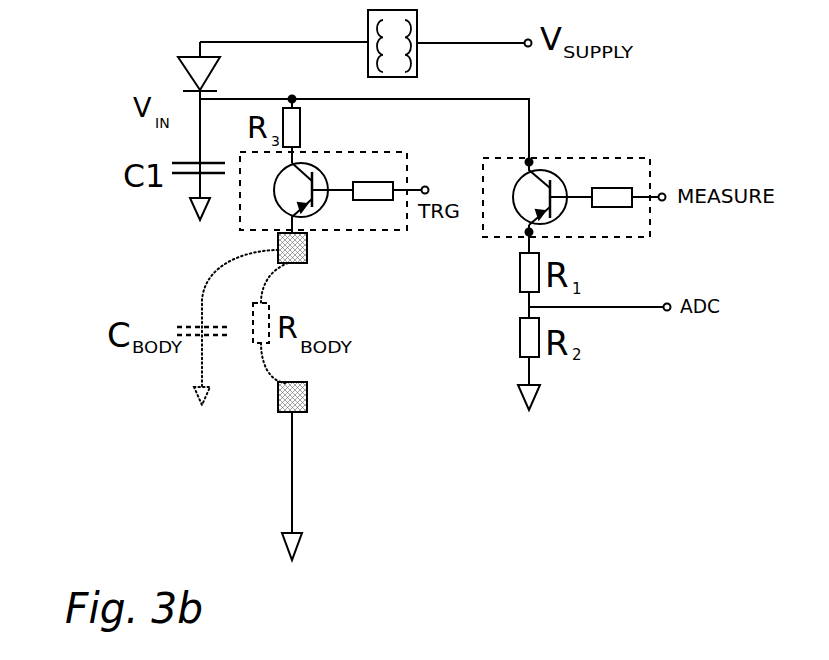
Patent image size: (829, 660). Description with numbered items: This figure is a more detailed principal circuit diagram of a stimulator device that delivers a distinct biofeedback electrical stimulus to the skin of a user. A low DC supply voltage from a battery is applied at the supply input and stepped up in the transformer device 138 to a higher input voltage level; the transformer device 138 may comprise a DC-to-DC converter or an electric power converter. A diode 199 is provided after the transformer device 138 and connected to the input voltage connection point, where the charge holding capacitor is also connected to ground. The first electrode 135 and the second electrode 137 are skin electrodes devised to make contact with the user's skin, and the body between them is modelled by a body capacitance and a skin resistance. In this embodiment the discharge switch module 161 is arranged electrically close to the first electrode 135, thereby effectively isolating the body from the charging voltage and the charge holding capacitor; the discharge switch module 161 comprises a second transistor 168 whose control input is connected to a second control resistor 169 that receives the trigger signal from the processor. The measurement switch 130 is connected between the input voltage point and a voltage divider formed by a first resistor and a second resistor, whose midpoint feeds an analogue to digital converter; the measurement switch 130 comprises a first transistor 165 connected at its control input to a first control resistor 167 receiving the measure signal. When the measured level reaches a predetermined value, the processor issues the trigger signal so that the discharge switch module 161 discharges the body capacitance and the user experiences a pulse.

The diode 199 is at (162, 68).
The transformer device 138 is at (412, 65).
The discharge switch module 161 is at (250, 162).
The second transistor 168 is at (277, 203).
The second control resistor 169 is at (378, 200).
The first electrode 135 is at (300, 250).
The second electrode 137 is at (307, 395).
The measurement switch 130 is at (643, 168).
The first transistor 165 is at (545, 217).
The first control resistor 167 is at (613, 188).